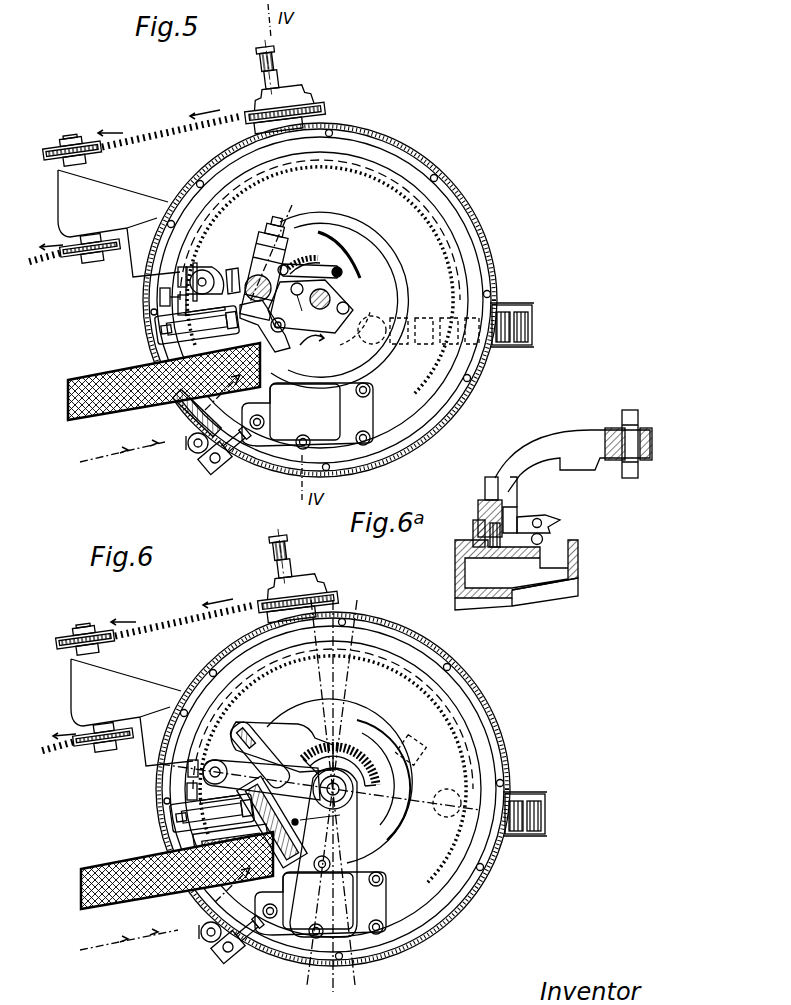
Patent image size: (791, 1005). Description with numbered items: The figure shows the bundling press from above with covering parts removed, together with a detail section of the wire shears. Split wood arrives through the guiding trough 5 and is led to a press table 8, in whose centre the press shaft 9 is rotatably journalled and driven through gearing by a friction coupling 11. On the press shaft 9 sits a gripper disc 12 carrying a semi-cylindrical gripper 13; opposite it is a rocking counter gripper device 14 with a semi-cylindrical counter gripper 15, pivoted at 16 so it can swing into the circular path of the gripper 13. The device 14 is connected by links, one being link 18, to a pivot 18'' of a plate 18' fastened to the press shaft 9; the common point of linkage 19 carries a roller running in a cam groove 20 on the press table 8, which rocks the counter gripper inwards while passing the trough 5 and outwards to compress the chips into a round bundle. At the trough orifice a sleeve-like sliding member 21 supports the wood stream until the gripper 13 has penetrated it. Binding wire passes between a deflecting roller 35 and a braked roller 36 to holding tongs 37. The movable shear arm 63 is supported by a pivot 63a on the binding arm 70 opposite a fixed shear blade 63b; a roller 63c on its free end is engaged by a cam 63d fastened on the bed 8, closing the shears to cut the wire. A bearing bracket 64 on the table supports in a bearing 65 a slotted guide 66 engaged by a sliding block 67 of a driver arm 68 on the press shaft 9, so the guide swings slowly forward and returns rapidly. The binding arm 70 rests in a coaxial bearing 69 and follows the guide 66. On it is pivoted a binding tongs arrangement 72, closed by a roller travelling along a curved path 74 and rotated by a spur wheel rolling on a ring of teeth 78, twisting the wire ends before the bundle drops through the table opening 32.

In FIG. 5, the guiding trough 5 is at (90, 372).
In FIG. 6, the guiding trough 5 is at (108, 875).
In FIG. 5, the press table 8 is at (386, 450).
In FIG. 6A, the press table 8 is at (455, 575).
In FIG. 6, the press table 8 is at (360, 958).
In FIG. 5, the press shaft 9 is at (329, 313).
In FIG. 5, the friction coupling 11 is at (339, 255).
In FIG. 5, the gripper disc 12 is at (364, 258).
In FIG. 5, the gripper 13 is at (310, 312).
In FIG. 5, the counter gripper device 14 is at (263, 258).
In FIG. 5, the counter gripper 15 is at (268, 272).
In FIG. 5, the pivot 16 is at (301, 308).
In FIG. 5, the link 18 is at (358, 288).
In FIG. 5, the plate 18' is at (379, 340).
In FIG. 5, the pivot 18'' is at (391, 337).
In FIG. 5, the common point of linkage 19 is at (345, 270).
In FIG. 5, the cam groove 20 is at (307, 255).
In FIG. 6, the cam groove 20 is at (348, 764).
In FIG. 5, the sliding member 21 is at (185, 403).
In FIG. 6, the sliding member 21 is at (292, 884).
In FIG. 5, the table opening 32 is at (345, 324).
In FIG. 5, the deflecting roller 35 is at (186, 442).
In FIG. 6, the deflecting roller 35 is at (200, 930).
In FIG. 5, the roller 36 is at (200, 460).
In FIG. 6, the roller 36 is at (212, 947).
In FIG. 5, the holding tongs 37 is at (225, 330).
In FIG. 6, the holding tongs 37 is at (172, 820).
In FIG. 5, the movable shear arm 63 is at (160, 298).
In FIG. 6A, the movable shear arm 63 is at (522, 523).
In FIG. 6A, the pivot 63a is at (545, 522).
In FIG. 6A, the fixed shear blade 63b is at (548, 536).
In FIG. 6A, the roller 63c is at (478, 505).
In FIG. 6A, the cam 63d is at (504, 545).
In FIG. 5, the bearing bracket 64 is at (330, 420).
In FIG. 6, the bearing bracket 64 is at (345, 917).
In FIG. 6, the bearing 65 is at (332, 866).
In FIG. 6, the slotted guide 66 is at (248, 738).
In FIG. 5, the sliding block 67 is at (312, 353).
In FIG. 6, the sliding block 67 is at (316, 821).
In FIG. 5, the driver arm 68 is at (302, 394).
In FIG. 6, the bearing 69 is at (346, 802).
In FIG. 5, the binding arm 70 is at (216, 262).
In FIG. 6A, the binding arm 70 is at (565, 455).
In FIG. 6, the binding arm 70 is at (292, 772).
In FIG. 5, the binding tongs arrangement 72 is at (233, 272).
In FIG. 6, the curved path 74 is at (244, 680).
In FIG. 6, the ring of teeth 78 is at (252, 714).